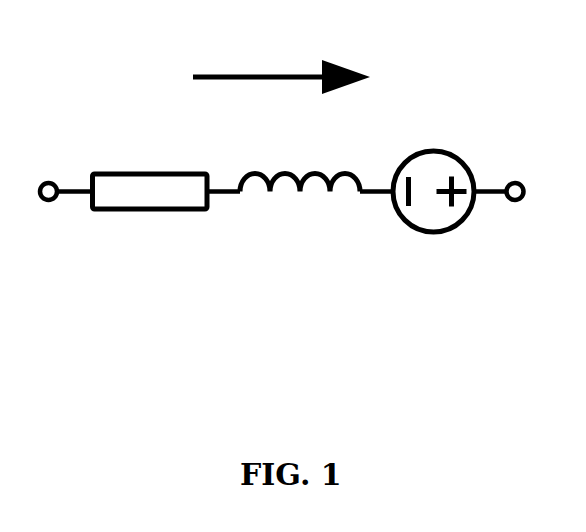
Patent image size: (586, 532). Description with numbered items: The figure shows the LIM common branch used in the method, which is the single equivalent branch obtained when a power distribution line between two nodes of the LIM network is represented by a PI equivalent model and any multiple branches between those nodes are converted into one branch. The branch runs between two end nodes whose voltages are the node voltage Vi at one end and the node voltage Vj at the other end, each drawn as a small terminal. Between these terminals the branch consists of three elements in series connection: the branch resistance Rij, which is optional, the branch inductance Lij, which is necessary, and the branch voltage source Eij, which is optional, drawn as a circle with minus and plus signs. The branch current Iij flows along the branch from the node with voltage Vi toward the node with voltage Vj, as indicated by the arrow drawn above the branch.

The node voltage at node i Vi is at (50, 116).
The node voltage at node j Vj is at (512, 117).
The branch current Iij is at (281, 47).
The branch resistance Rij is at (150, 264).
The branch inductance Lij is at (300, 264).
The branch voltage source Eij is at (433, 252).